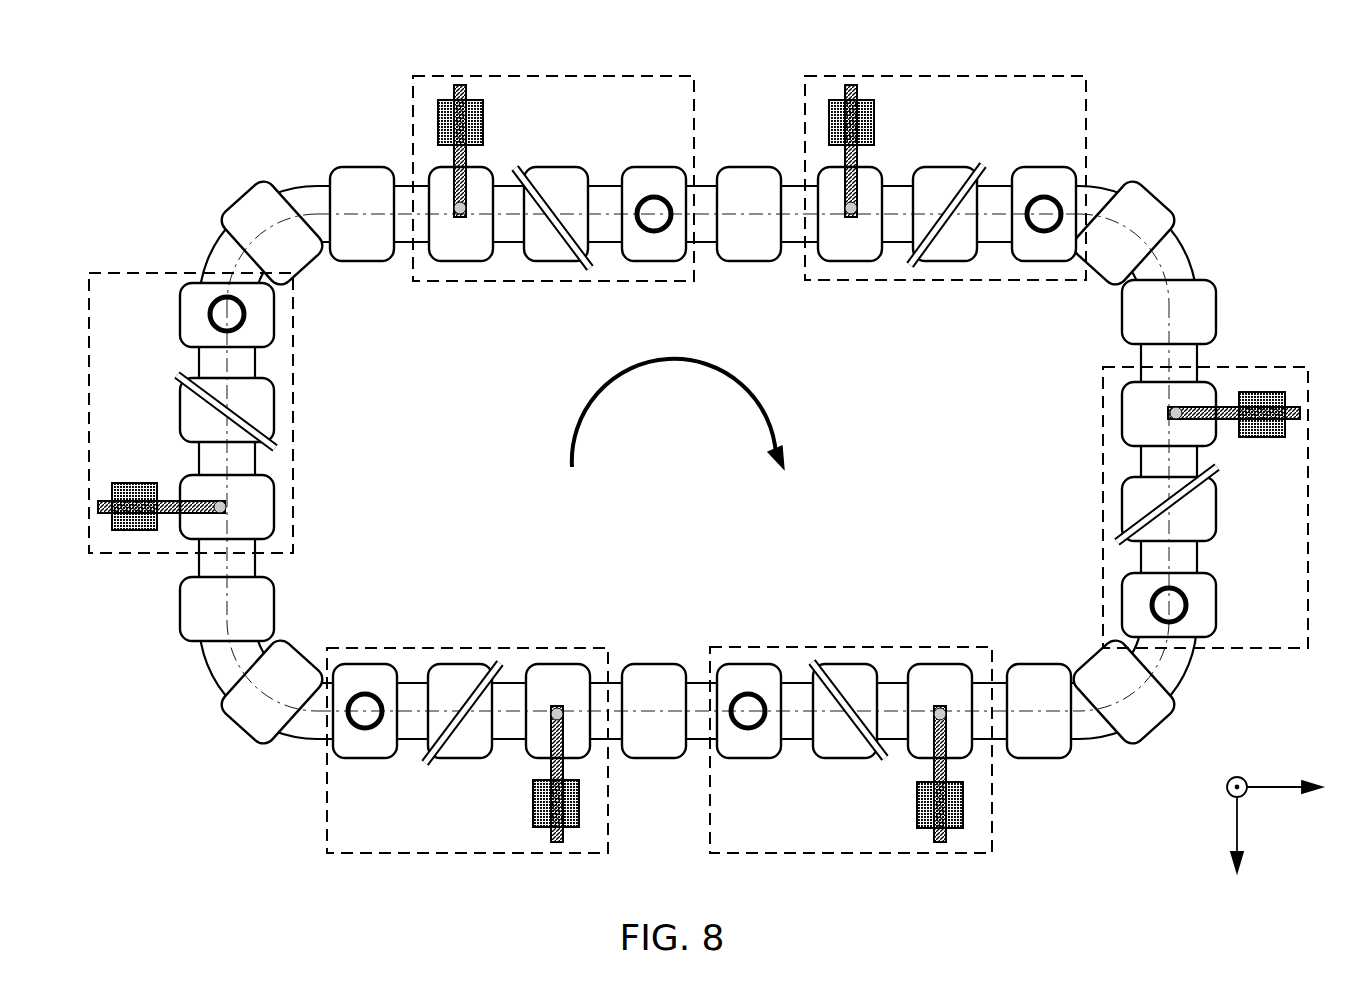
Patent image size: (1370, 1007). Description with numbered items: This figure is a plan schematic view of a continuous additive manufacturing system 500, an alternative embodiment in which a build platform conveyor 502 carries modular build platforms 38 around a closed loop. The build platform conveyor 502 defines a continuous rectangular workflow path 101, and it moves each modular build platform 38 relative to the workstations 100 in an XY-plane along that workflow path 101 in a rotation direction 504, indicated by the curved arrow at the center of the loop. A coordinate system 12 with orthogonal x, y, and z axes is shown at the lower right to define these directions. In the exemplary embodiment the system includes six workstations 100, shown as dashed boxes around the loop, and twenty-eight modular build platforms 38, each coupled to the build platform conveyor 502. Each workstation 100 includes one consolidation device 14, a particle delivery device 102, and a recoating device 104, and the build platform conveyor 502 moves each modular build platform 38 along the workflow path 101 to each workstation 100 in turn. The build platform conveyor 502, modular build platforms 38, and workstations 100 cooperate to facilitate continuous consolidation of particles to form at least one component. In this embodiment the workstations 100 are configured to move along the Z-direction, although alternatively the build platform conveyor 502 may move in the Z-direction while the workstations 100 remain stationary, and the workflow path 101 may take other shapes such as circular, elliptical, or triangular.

The continuous additive manufacturing system 500 is at (1244, 76).
The build platform conveyor 502 is at (304, 188).
The rotation direction 504 is at (672, 380).
The workstation 100 is at (160, 273).
The workflow path 101 is at (258, 700).
The particle delivery device 102 is at (440, 120).
The recoating device 104 is at (866, 730).
The coordinate system 12 is at (1282, 750).
The consolidation device 14 is at (1044, 206).
The modular build platform 38 is at (1200, 290).